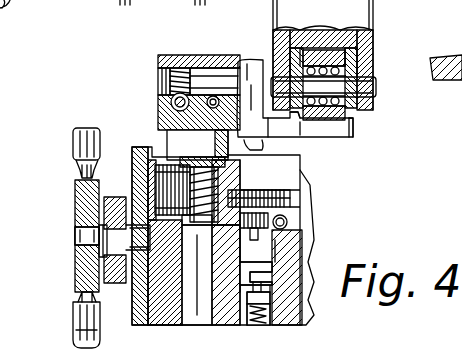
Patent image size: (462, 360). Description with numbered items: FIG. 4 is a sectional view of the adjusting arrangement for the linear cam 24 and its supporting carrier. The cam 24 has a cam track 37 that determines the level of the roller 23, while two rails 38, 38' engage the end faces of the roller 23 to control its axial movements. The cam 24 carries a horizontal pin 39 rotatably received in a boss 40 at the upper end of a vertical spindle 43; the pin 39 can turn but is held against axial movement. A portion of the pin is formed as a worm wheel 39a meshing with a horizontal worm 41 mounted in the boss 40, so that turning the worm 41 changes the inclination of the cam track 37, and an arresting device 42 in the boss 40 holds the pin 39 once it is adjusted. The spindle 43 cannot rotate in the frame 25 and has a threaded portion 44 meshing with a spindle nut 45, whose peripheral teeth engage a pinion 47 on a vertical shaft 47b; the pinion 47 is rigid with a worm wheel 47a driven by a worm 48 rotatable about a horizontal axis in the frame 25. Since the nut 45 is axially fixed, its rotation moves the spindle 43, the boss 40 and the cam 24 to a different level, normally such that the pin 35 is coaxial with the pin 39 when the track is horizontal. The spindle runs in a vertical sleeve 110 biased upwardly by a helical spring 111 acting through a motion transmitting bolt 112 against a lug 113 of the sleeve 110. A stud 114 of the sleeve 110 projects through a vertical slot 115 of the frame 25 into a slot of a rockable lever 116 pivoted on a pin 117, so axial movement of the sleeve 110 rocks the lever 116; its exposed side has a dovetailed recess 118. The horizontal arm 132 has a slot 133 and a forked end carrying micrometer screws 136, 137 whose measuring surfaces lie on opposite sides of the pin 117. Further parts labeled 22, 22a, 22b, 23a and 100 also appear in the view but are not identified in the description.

The housing 22 is at (365, 15).
The housing arm 22a is at (278, 124).
The bracket plate 22b is at (360, 108).
The roller 23 is at (330, 62).
The bearing seat wall 23a is at (296, 55).
The cam 24 is at (356, 138).
The frame 25 is at (306, 320).
The pin 35 is at (364, 90).
The cam track 37 is at (330, 122).
The rail 38 is at (329, 127).
The rail 38' is at (304, 136).
The horizontal pin 39 is at (200, 66).
The worm wheel portion 39a is at (176, 56).
The boss 40 is at (160, 60).
The worm 41 is at (169, 104).
The arresting device 42 is at (199, 113).
The spindle 43 is at (201, 318).
The threaded portion 44 is at (197, 230).
The spindle nut 45 is at (160, 158).
The pinion 47 is at (291, 197).
The worm wheel 47a is at (260, 242).
The vertical shaft 47b is at (250, 240).
The worm 48 is at (288, 221).
The block 100 is at (440, 58).
The sleeve 110 is at (166, 320).
The helical spring 111 is at (255, 326).
The motion transmitting bolt 112 is at (268, 302).
The lug 113 is at (268, 275).
The stud 114 is at (148, 240).
The vertical slot 115 is at (150, 282).
The rockable lever 116 is at (120, 198).
The pin 117 is at (72, 240).
The recess 118 is at (116, 284).
The arm 132 is at (70, 197).
The slot 133 is at (76, 233).
The micrometer screw 136 is at (78, 146).
The micrometer screw 137 is at (78, 327).